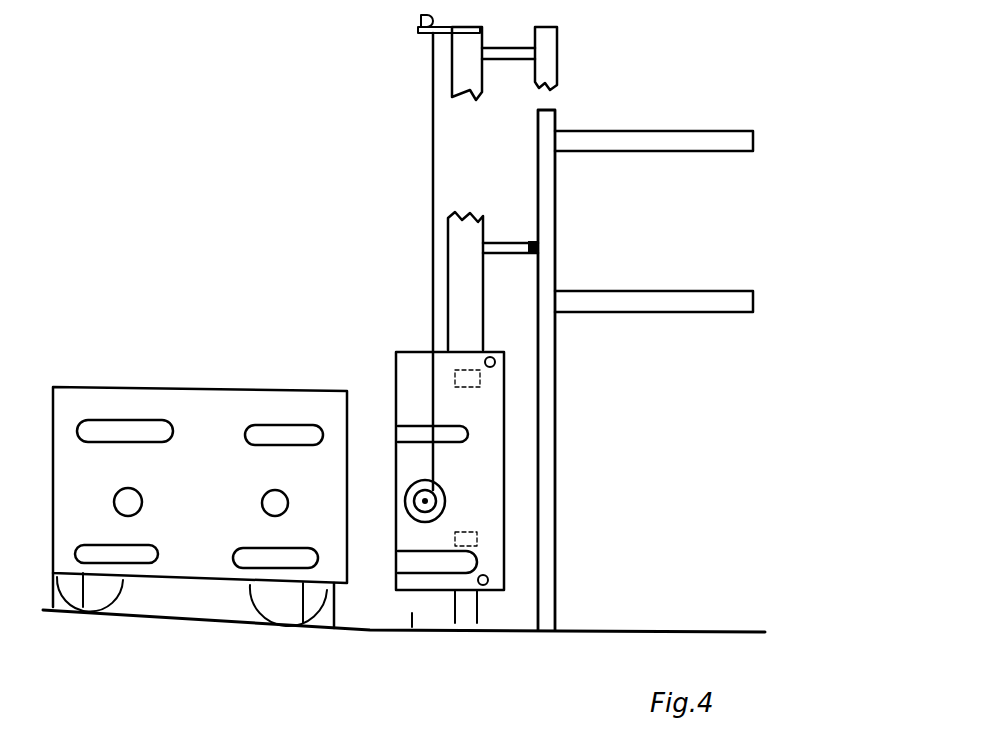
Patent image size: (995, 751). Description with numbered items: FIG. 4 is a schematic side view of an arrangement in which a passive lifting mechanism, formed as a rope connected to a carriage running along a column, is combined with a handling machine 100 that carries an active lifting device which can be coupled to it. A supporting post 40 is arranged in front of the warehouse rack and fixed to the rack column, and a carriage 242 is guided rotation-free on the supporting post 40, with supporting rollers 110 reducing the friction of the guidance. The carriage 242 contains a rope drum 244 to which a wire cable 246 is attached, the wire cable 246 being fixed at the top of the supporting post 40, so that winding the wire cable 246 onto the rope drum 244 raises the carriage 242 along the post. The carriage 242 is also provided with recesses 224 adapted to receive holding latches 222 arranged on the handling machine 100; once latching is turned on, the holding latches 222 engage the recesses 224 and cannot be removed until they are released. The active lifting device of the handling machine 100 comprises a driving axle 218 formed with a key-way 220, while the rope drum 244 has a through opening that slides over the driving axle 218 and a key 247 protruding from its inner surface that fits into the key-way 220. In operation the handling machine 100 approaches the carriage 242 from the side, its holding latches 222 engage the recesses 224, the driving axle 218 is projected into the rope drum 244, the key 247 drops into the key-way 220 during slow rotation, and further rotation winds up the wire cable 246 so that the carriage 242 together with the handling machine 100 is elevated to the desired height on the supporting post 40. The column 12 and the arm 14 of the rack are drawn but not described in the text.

The handling machine 100 is at (173, 342).
The upright column 12 is at (548, 420).
The support arm 14 is at (627, 298).
The supporting post 40 is at (488, 212).
The supporting rollers 110 is at (493, 358).
The driving axle 218 is at (263, 500).
The key-way 220 is at (277, 495).
The holding latches 222 is at (280, 420).
The recesses 224 is at (413, 437).
The carriage 242 is at (408, 362).
The rope drum 244 is at (442, 495).
The wire cable 246 is at (428, 88).
The key 247 is at (403, 508).